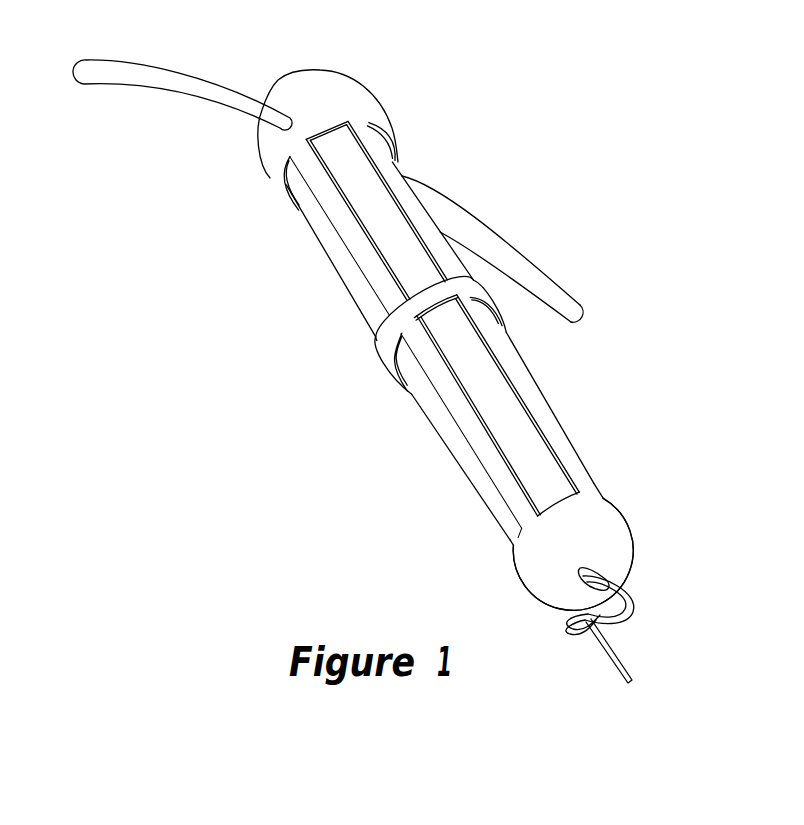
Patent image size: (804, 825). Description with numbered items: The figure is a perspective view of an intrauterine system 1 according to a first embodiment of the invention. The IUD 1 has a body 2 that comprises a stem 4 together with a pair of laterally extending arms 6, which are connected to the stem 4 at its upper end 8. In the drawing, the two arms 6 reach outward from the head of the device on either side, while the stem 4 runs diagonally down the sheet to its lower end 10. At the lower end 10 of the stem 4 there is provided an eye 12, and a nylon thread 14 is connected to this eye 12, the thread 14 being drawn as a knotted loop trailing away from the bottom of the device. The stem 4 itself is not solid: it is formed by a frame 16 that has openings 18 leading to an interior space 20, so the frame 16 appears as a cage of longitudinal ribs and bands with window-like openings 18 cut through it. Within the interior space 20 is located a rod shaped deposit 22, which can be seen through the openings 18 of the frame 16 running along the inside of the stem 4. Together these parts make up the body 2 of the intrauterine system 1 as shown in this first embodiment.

The intrauterine system 1 is at (544, 170).
The body 2 is at (262, 106).
The stem 4 is at (437, 228).
The arms 6 is at (540, 262).
The upper end 8 is at (272, 179).
The lower end 10 is at (612, 560).
The eye 12 is at (590, 590).
The nylon thread 14 is at (608, 663).
The frame 16 is at (570, 465).
The openings 18 is at (514, 444).
The interior space 20 is at (530, 473).
The rod shaped deposit 22 is at (545, 492).